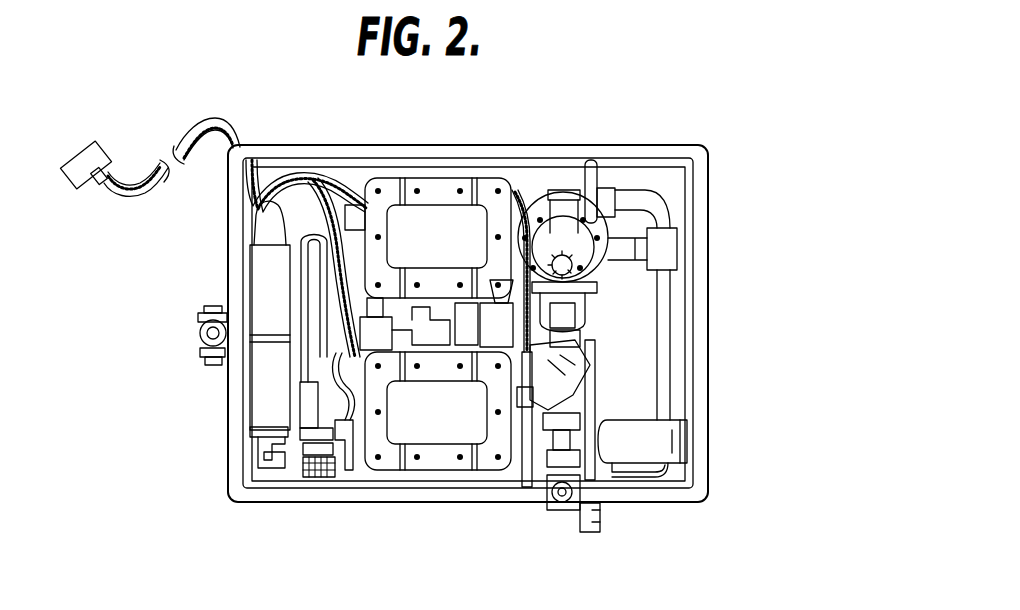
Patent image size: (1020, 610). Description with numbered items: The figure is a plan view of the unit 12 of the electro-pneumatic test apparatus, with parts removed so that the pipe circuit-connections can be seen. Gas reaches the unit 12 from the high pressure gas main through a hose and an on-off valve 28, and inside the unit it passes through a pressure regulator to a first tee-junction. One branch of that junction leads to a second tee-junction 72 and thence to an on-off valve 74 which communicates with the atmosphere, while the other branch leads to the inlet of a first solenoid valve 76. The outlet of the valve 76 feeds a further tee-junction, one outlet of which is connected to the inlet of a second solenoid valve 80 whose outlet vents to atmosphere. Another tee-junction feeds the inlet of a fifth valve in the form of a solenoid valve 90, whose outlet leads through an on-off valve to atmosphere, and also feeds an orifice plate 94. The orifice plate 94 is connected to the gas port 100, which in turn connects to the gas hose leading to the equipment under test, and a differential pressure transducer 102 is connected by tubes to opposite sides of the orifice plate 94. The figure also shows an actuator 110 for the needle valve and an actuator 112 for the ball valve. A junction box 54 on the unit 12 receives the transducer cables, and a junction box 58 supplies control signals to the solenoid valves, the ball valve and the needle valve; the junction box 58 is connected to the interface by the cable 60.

The unit 12 is at (708, 146).
The on-off valve 28 is at (577, 492).
The junction box 54 is at (257, 368).
The junction box 58 is at (267, 259).
The cable 60 is at (138, 177).
The second tee-junction 72 is at (662, 232).
The on-off valve 74 is at (573, 185).
The first solenoid valve 76 is at (522, 470).
The second solenoid valve 80 is at (473, 322).
The solenoid valve 90 is at (355, 330).
The orifice plate 94 is at (305, 393).
The gas port 100 is at (317, 478).
The differential pressure transducer 102 is at (345, 470).
The actuator 110 is at (430, 438).
The actuator 112 is at (427, 215).